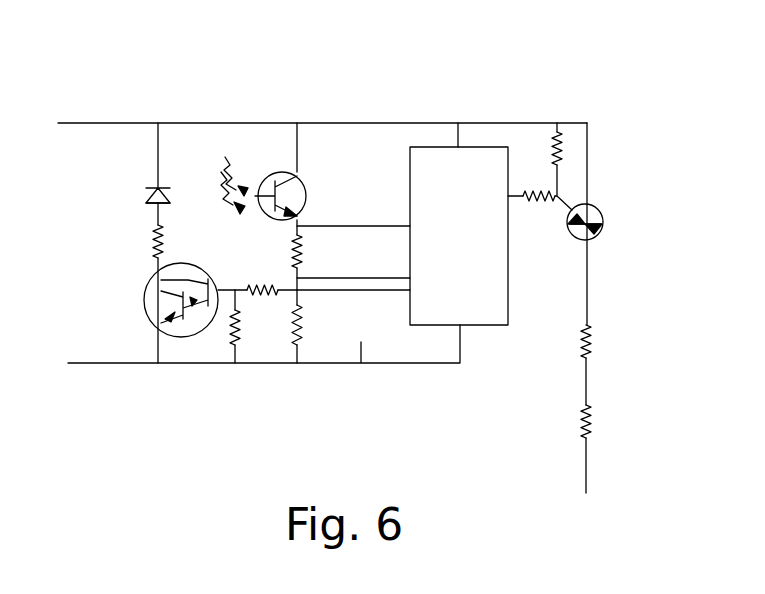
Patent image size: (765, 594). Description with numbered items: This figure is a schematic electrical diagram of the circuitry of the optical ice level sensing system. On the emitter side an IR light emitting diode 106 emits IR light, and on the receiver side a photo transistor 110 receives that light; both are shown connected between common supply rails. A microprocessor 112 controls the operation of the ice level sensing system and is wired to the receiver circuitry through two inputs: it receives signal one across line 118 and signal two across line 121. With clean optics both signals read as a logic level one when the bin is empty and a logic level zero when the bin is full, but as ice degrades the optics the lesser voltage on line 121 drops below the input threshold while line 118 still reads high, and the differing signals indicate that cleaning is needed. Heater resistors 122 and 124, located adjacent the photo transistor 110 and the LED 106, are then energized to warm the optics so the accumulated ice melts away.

The light emitting diode 106 is at (147, 192).
The photo transistor 110 is at (265, 180).
The microprocessor 112 is at (478, 146).
The line 118 is at (338, 225).
The line 121 is at (345, 291).
The heater resistor 122 is at (593, 352).
The heater resistor 124 is at (593, 432).